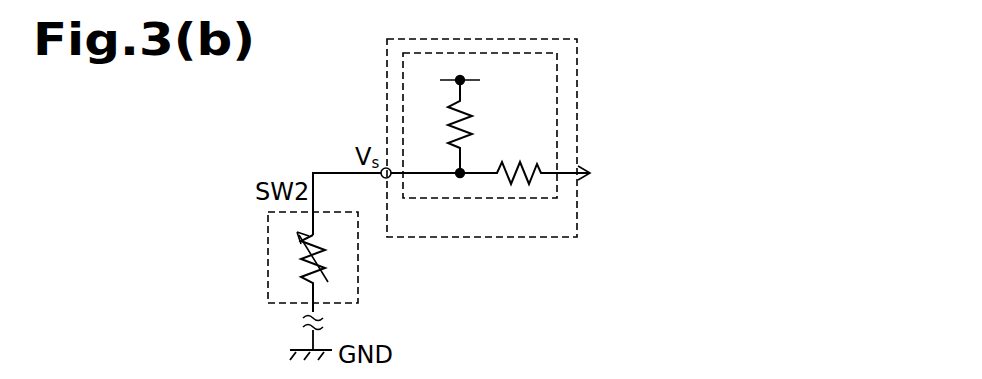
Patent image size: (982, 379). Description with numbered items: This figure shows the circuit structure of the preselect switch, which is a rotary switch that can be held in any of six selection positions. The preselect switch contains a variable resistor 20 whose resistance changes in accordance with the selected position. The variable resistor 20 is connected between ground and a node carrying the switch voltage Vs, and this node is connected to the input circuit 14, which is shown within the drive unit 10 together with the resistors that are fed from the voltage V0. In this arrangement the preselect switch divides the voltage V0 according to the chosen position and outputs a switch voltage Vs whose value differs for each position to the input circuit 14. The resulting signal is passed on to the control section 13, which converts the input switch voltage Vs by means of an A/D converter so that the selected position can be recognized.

The drive unit 10 is at (386, 74).
The input circuit 14 is at (512, 200).
The control section 13 is at (718, 177).
The variable resistor 20 is at (358, 262).